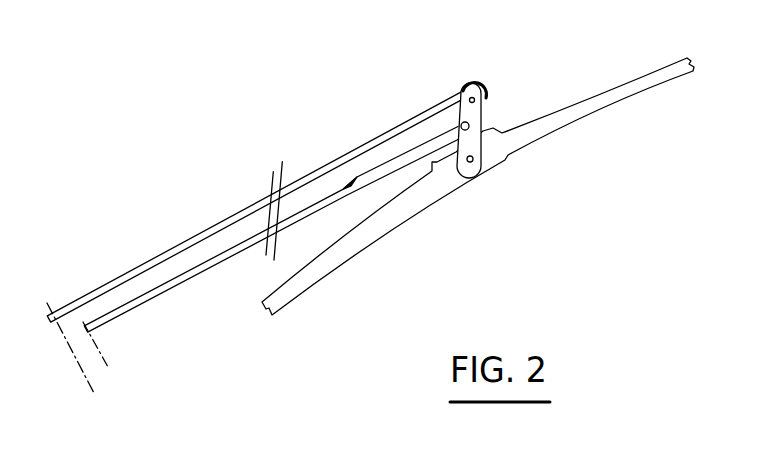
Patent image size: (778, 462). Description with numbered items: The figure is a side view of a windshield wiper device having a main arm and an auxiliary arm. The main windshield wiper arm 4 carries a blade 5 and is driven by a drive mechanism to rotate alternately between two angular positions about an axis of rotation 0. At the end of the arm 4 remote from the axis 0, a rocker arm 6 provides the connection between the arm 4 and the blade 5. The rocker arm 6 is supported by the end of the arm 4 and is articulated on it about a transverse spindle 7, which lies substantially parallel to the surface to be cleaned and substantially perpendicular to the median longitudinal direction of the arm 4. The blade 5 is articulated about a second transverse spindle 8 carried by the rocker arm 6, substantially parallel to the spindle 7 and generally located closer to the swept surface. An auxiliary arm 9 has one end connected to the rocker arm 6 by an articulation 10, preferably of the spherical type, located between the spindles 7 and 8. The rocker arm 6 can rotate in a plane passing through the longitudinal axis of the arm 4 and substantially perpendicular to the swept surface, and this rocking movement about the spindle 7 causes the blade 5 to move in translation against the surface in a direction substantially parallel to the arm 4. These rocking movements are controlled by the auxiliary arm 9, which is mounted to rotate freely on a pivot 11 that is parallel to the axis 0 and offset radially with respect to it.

The axis of rotation 0 is at (50, 300).
The main windshield wiper arm 4 is at (238, 212).
The blade 5 is at (557, 137).
The rocker arm 6 is at (485, 113).
The transverse spindle 7 is at (468, 90).
The second transverse spindle 8 is at (471, 163).
The auxiliary arm 9 is at (190, 280).
The articulation 10 is at (460, 124).
The pivot 11 is at (102, 343).